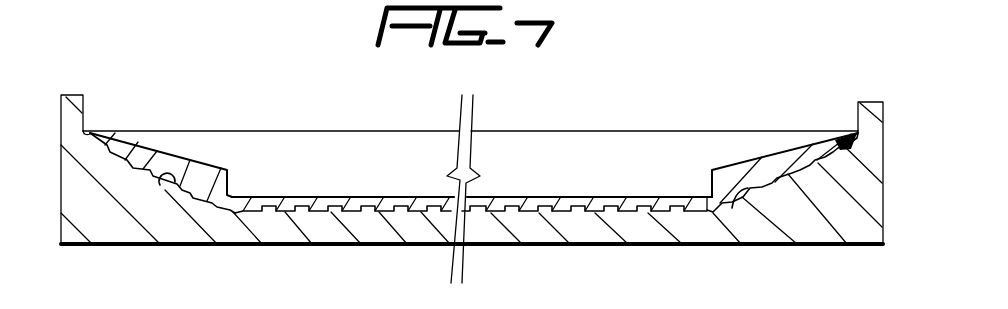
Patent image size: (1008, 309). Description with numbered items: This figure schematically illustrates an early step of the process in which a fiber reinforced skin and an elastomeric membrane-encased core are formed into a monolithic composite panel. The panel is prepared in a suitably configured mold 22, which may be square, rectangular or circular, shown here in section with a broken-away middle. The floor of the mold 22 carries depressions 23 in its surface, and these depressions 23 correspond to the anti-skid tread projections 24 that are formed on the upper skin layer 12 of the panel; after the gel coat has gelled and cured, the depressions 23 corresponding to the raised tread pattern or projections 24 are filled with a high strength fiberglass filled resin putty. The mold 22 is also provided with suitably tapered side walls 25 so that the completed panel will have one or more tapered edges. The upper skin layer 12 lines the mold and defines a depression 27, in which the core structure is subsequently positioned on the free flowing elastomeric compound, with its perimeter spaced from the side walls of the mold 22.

The upper skin layer 12 is at (262, 213).
The mold 22 is at (640, 235).
The depressions 23 is at (388, 213).
The anti-skid tread projections 24 is at (303, 213).
The tapered side walls 25 is at (160, 185).
The depression 27 is at (261, 145).